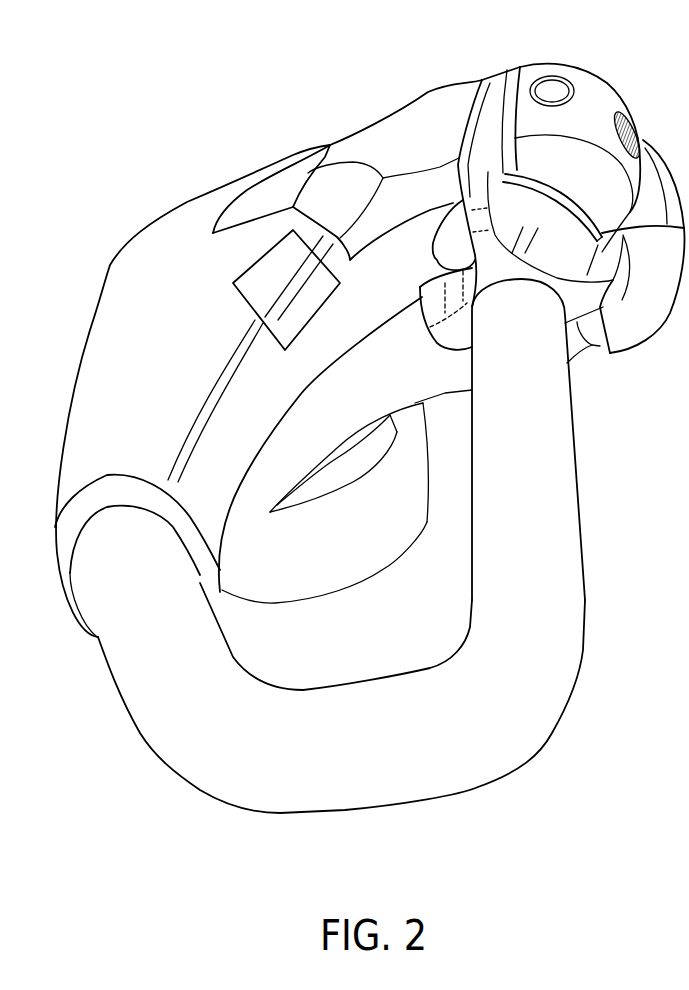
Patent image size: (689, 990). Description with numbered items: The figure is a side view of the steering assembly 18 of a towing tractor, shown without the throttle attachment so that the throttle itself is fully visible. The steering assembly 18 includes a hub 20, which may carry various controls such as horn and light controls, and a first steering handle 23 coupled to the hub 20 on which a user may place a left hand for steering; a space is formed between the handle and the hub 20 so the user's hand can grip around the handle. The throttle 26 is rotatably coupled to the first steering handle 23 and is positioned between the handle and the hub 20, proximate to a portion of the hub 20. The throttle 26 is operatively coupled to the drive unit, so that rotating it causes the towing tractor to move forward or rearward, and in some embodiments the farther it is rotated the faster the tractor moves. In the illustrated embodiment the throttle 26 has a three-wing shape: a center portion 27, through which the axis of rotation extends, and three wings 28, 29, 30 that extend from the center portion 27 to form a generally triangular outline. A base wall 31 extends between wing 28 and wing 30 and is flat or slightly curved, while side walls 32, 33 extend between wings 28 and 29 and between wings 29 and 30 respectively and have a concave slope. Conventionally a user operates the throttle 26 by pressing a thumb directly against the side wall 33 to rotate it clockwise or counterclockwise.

The steering assembly 18 is at (93, 88).
The hub 20 is at (110, 267).
The first steering handle 23 is at (181, 774).
The throttle 26 is at (417, 162).
The center portion 27 is at (522, 273).
The wing 28 is at (612, 307).
The wing 29 is at (460, 190).
The wing 30 is at (421, 300).
The base wall 31 is at (593, 348).
The side wall 32 is at (555, 242).
The side wall 33 is at (462, 261).